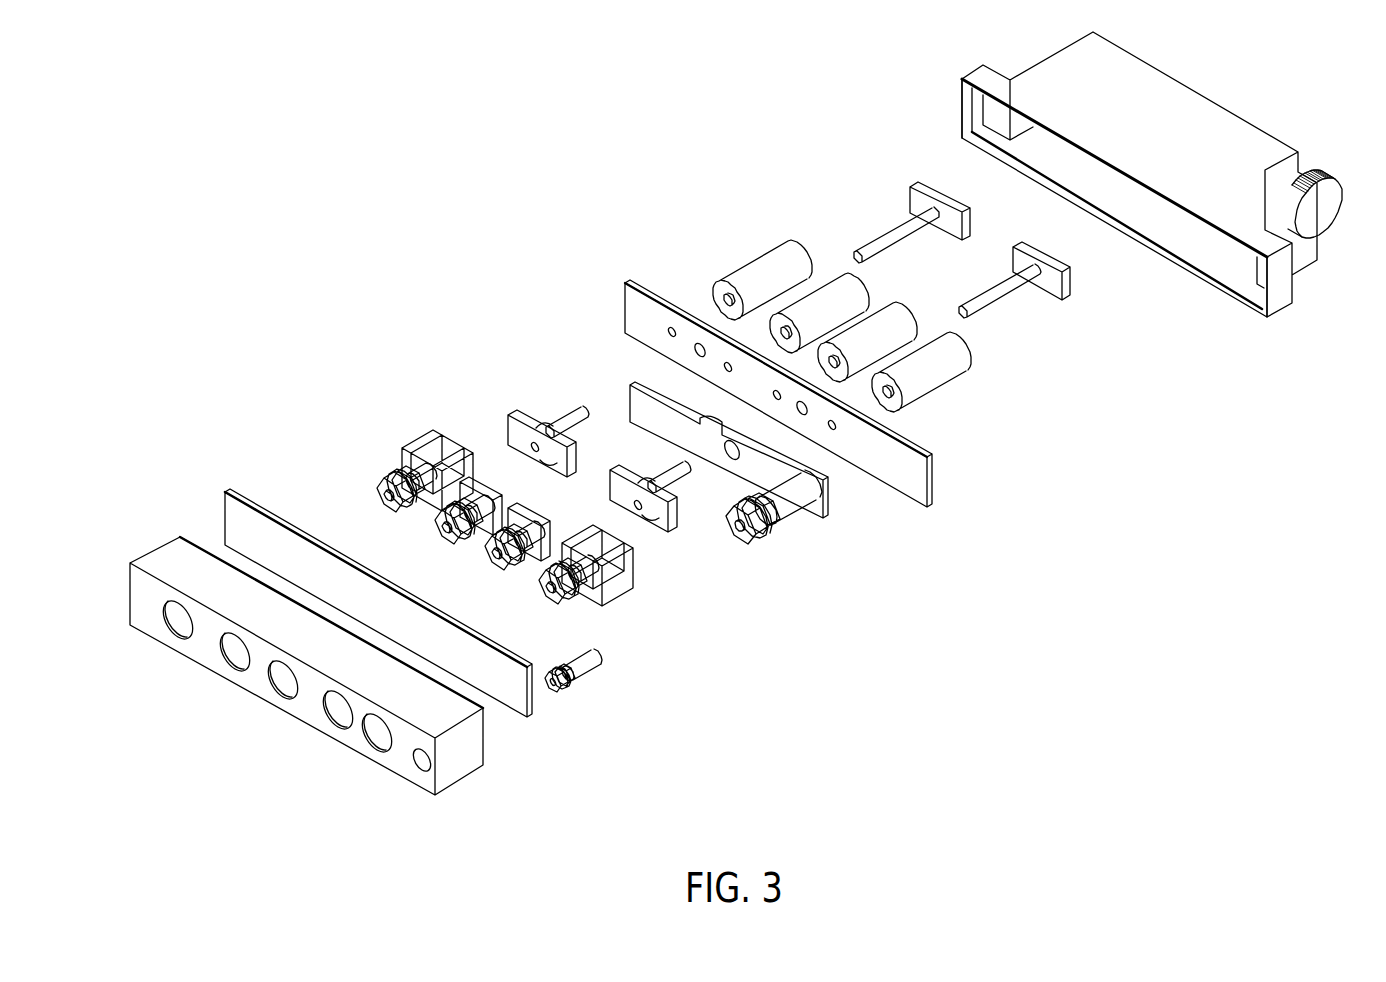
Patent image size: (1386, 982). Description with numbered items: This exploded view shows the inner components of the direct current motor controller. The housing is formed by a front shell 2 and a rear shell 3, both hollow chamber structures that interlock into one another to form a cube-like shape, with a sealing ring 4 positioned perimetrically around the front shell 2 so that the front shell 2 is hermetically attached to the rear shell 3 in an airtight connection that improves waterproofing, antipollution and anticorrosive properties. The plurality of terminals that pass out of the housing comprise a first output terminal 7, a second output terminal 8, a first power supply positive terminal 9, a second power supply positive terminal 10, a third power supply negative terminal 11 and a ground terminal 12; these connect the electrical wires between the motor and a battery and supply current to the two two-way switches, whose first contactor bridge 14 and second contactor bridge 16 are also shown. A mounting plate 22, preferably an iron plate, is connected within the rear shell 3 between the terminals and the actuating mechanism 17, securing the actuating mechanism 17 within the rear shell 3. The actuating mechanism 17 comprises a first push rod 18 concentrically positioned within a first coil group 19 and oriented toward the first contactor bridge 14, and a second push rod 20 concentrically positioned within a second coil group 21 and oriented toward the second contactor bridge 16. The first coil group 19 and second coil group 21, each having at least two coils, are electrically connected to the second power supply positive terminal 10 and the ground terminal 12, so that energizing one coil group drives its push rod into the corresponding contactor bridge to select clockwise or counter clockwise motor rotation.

The front shell 2 is at (168, 548).
The rear shell 3 is at (1155, 75).
The sealing ring 4 is at (225, 492).
The first output terminal 7 is at (380, 497).
The second output terminal 8 is at (540, 588).
The first power supply positive terminal 9 is at (440, 525).
The second power supply positive terminal 10 is at (487, 553).
The third power supply negative terminal 11 is at (767, 530).
The ground terminal 12 is at (573, 683).
The first contactor bridge 14 is at (513, 413).
The second contactor bridge 16 is at (620, 477).
The actuating mechanism 17 is at (852, 250).
The first push rod 18 is at (919, 181).
The first coil group 19 is at (881, 295).
The second push rod 20 is at (1028, 248).
The second coil group 21 is at (994, 357).
The mounting plate 22 is at (927, 497).